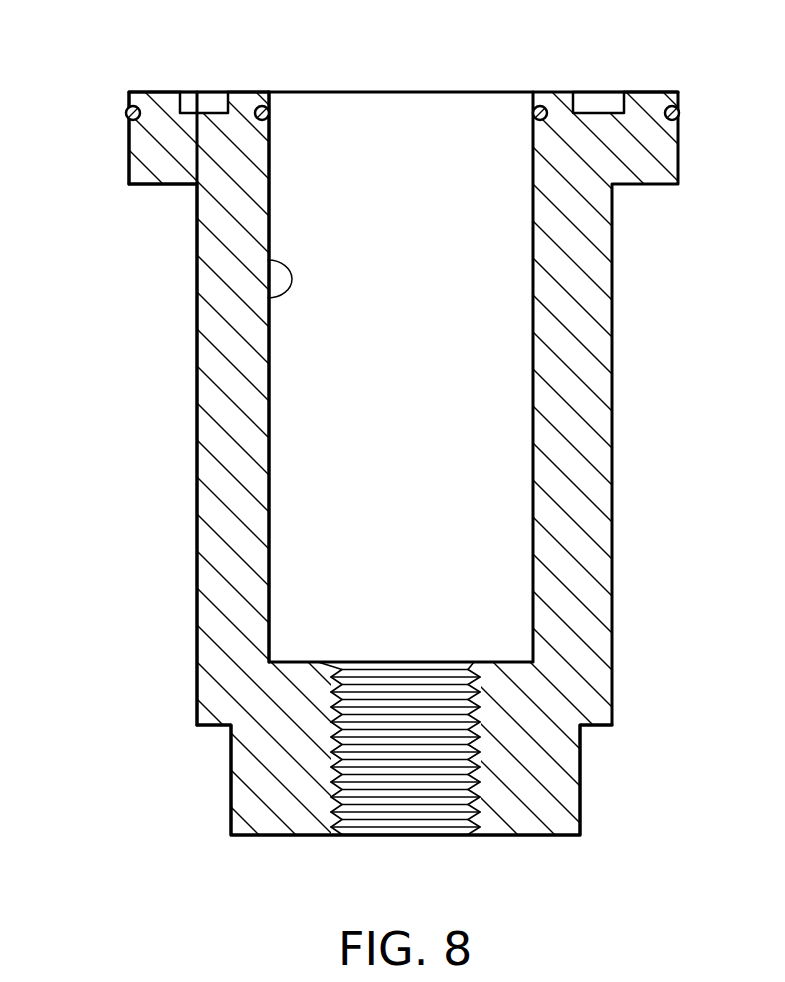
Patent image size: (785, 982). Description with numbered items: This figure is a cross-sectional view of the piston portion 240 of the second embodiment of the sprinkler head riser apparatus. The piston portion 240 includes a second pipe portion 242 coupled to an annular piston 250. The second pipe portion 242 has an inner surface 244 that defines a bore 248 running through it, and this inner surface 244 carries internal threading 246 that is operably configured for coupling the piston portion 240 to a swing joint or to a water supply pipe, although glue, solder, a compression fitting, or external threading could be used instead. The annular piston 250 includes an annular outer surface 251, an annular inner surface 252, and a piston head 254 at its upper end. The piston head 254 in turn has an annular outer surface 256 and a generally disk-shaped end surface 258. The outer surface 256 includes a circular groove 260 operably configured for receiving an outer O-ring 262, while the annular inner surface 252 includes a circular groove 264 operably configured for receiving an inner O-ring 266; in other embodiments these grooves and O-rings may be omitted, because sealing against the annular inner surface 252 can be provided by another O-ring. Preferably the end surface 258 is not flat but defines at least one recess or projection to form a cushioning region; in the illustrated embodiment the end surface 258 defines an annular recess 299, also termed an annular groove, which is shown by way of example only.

The piston portion 240 is at (652, 68).
The second pipe portion 242 is at (520, 777).
The inner surface 244 is at (472, 662).
The internal threading 246 is at (355, 697).
The bore 248 is at (395, 803).
The annular piston 250 is at (227, 347).
The annular outer surface 251 is at (197, 296).
The annular inner surface 252 is at (266, 259).
The piston head 254 is at (182, 147).
The annular outer surface 256 is at (129, 140).
The end surface 258 is at (245, 92).
The circular groove 260 is at (142, 110).
The outer O-ring 262 is at (125, 113).
The circular groove 264 is at (548, 113).
The inner O-ring 266 is at (532, 110).
The annular recess 299 is at (209, 98).